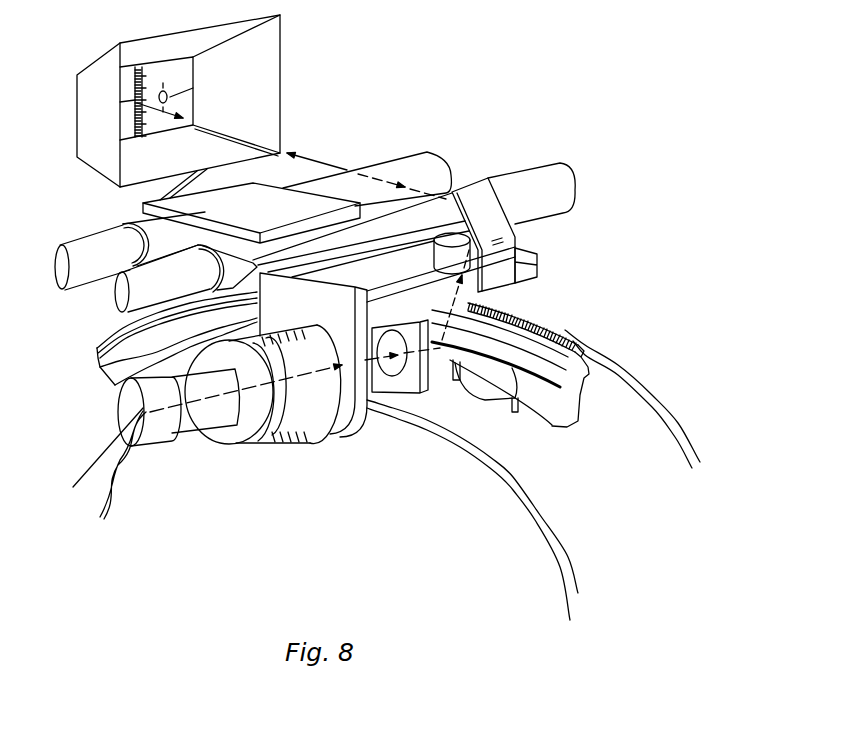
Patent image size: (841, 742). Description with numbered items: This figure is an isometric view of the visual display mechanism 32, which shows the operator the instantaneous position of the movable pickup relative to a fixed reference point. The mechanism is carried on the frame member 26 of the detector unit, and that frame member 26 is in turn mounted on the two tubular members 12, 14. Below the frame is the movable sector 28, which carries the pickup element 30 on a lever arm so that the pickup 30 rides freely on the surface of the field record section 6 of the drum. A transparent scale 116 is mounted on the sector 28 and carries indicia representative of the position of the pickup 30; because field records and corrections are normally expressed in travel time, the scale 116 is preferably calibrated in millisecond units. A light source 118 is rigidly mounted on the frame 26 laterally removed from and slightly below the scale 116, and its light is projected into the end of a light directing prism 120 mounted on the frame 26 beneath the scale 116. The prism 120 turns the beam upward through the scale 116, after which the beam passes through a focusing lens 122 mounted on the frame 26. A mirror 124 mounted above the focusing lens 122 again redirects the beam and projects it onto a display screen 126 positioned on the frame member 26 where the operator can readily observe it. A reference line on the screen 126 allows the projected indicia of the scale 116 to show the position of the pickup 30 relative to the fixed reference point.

The field record section 6 is at (561, 522).
The tubular member 12 is at (426, 163).
The tubular member 14 is at (538, 175).
The frame member 26 is at (538, 260).
The sector 28 is at (123, 367).
The pickup element 30 is at (498, 396).
The visual display mechanism 32 is at (373, 111).
The transparent scale 116 is at (497, 356).
The light source 118 is at (237, 434).
The light directing prism 120 is at (440, 356).
The focusing lens 122 is at (447, 262).
The mirror 124 is at (452, 216).
The display screen 126 is at (180, 70).